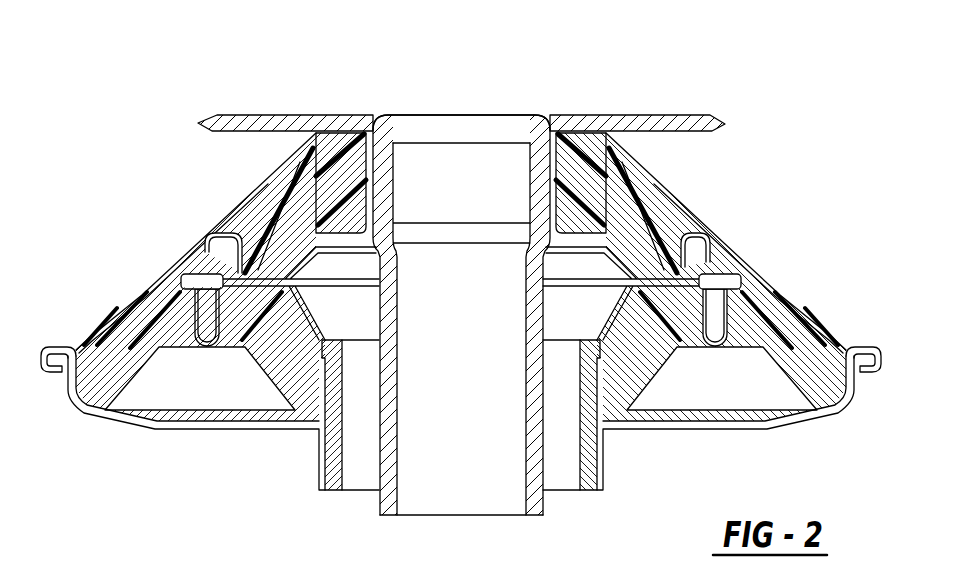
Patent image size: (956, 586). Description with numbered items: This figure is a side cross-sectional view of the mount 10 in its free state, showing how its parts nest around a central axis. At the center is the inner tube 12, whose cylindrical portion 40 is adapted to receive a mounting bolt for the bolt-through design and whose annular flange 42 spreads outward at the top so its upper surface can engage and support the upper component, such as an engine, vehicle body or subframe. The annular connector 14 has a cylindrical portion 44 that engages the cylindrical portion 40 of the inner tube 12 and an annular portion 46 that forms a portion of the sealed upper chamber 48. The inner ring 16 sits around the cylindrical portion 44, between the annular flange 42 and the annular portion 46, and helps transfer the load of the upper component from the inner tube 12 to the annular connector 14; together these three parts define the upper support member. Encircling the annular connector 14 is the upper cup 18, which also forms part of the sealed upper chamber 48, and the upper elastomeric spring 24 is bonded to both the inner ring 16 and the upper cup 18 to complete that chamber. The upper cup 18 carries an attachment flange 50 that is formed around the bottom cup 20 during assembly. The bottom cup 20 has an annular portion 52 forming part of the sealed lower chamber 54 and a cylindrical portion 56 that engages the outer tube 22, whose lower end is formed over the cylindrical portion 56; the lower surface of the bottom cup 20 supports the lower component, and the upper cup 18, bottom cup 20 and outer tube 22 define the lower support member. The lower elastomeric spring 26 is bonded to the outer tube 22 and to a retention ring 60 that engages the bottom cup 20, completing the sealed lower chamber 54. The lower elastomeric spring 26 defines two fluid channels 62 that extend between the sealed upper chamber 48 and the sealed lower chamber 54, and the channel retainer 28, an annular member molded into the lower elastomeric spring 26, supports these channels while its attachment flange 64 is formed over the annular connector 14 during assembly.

The mount 10 is at (472, 287).
The inner tube 12 is at (390, 517).
The annular connector 14 is at (690, 218).
The inner ring 16 is at (597, 153).
The upper cup 18 is at (800, 310).
The bottom cup 20 is at (790, 430).
The outer tube 22 is at (586, 478).
The upper elastomeric spring 24 is at (627, 197).
The lower elastomeric spring 26 is at (813, 352).
The channel retainer 28 is at (733, 310).
The cylindrical portion 40 is at (461, 343).
The annular flange 42 is at (275, 125).
The cylindrical portion 44 is at (392, 187).
The annular portion 46 is at (297, 205).
The sealed upper chamber 48 is at (270, 265).
The attachment flange 50 is at (52, 348).
The annular portion 52 is at (210, 440).
The sealed lower chamber 54 is at (193, 372).
The cylindrical portion 56 is at (318, 460).
The retention ring 60 is at (848, 395).
The fluid channel 62 is at (698, 238).
The attachment flange 64 is at (183, 280).